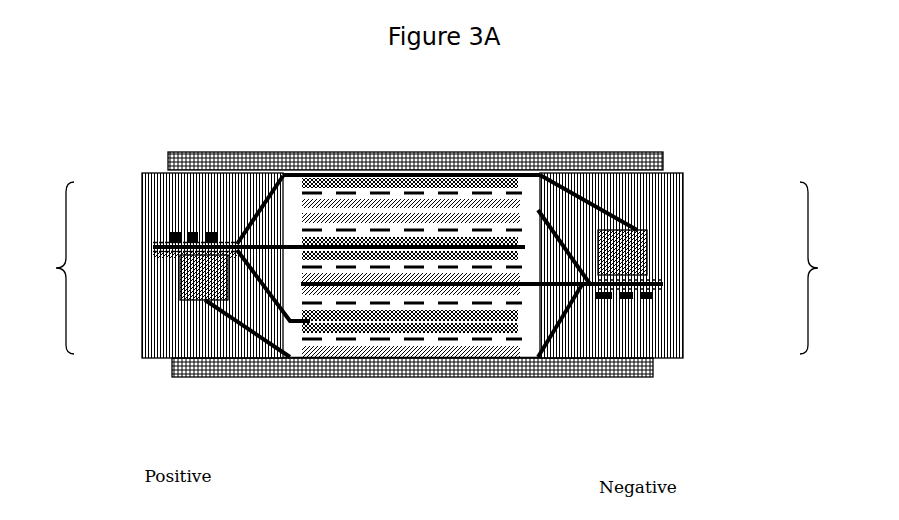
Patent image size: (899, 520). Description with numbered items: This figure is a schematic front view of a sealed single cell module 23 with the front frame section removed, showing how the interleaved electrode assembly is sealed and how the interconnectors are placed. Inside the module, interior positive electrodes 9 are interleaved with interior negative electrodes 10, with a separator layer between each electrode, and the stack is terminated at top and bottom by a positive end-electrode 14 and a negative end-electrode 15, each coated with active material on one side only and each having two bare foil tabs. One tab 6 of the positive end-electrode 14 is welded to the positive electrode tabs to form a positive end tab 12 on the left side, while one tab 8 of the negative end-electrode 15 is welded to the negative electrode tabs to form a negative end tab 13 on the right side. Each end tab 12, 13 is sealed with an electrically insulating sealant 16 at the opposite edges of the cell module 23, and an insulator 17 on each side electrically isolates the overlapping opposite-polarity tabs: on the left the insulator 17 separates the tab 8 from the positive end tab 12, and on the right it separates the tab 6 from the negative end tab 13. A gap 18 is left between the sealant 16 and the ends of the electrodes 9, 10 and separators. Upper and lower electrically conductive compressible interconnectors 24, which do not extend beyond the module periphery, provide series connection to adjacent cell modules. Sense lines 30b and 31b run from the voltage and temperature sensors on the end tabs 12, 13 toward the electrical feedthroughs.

The bare foil tab 6 is at (259, 212).
The bare foil tab 8 is at (239, 323).
The interior positive electrode 9 is at (276, 246).
The interior negative electrode 10 is at (585, 284).
The positive end tab 12 is at (172, 254).
The negative end tab 13 is at (663, 285).
The positive end-electrode 14 is at (432, 173).
The negative end-electrode 15 is at (428, 360).
The electrically insulating sealant 16 is at (160, 260).
The insulator 17 is at (192, 283).
The gap 18 is at (527, 193).
The cell module 23 is at (439, 268).
The electrically conductive compressible interconnector 24 is at (655, 164).
The sense line 30b is at (173, 233).
The sense line 31b is at (213, 232).